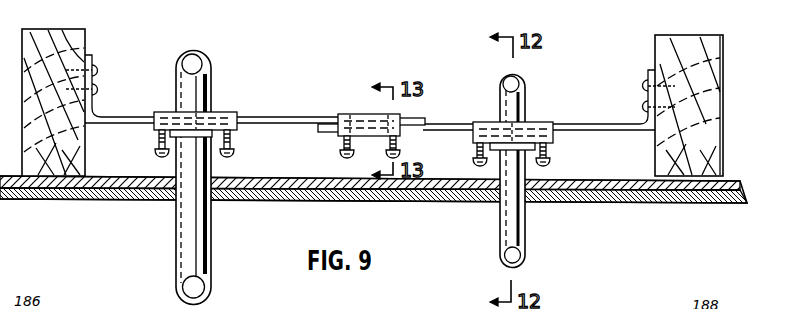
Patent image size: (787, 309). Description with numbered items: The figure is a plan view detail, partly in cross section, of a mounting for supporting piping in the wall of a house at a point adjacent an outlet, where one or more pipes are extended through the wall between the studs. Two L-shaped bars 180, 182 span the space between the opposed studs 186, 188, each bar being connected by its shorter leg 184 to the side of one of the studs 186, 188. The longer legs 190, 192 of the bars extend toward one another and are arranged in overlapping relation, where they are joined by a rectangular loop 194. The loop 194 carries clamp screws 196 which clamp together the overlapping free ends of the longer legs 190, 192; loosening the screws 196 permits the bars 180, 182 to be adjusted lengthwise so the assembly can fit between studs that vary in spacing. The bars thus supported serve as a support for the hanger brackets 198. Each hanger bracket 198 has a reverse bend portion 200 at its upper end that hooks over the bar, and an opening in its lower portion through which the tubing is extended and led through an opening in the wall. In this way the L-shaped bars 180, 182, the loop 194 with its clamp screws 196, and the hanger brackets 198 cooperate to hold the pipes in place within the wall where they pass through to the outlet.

The L-shaped bar 180 is at (273, 116).
The L-shaped bar 182 is at (584, 123).
The shorter legs 184 is at (93, 60).
The stud 186 is at (88, 36).
The stud 188 is at (653, 44).
The longer leg 190 is at (410, 119).
The longer leg 192 is at (328, 131).
The rectangular loop 194 is at (371, 139).
The clamp screws 196 is at (344, 143).
The hanger brackets 198 is at (214, 112).
The reverse bend portion 200 is at (346, 114).